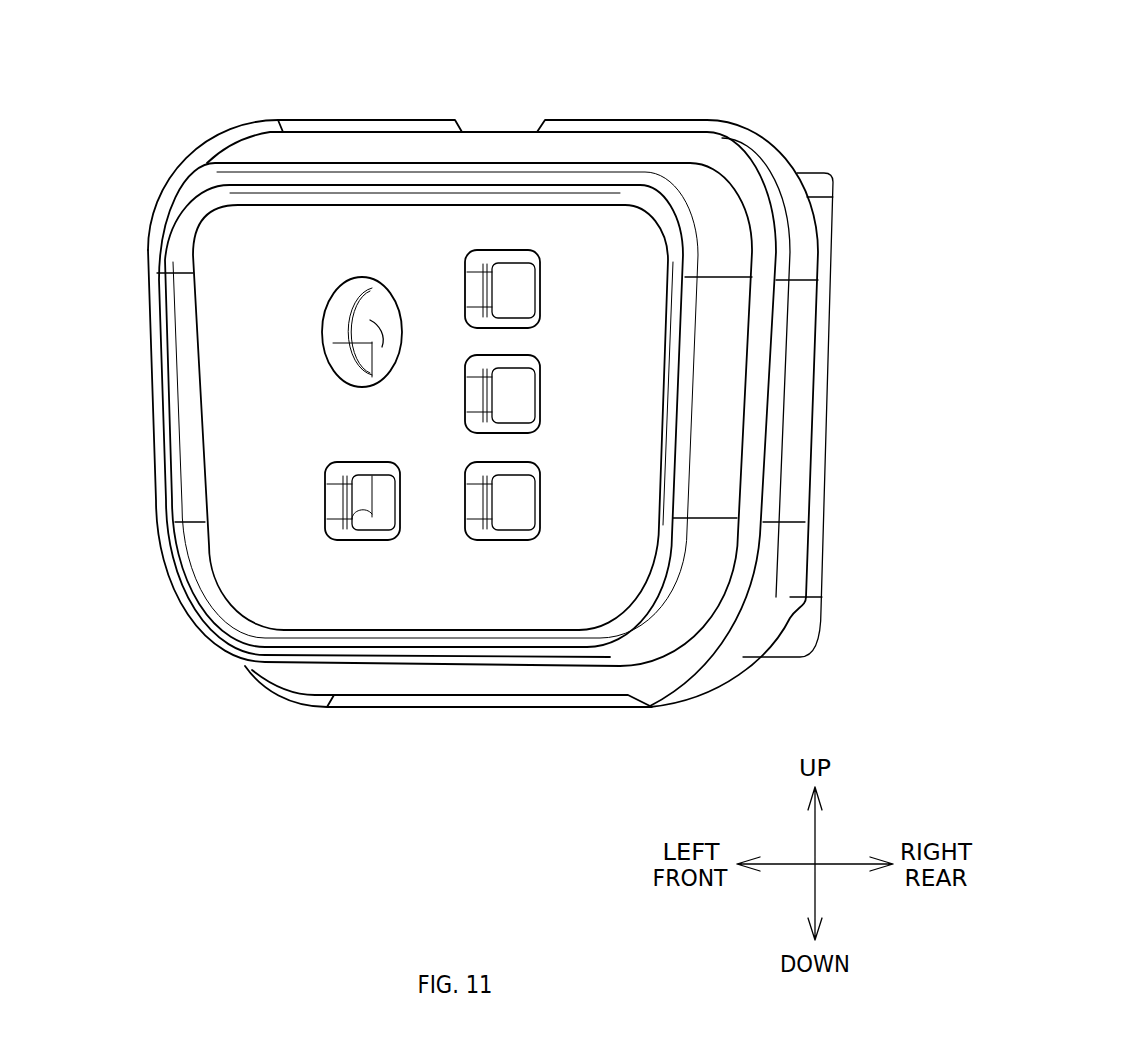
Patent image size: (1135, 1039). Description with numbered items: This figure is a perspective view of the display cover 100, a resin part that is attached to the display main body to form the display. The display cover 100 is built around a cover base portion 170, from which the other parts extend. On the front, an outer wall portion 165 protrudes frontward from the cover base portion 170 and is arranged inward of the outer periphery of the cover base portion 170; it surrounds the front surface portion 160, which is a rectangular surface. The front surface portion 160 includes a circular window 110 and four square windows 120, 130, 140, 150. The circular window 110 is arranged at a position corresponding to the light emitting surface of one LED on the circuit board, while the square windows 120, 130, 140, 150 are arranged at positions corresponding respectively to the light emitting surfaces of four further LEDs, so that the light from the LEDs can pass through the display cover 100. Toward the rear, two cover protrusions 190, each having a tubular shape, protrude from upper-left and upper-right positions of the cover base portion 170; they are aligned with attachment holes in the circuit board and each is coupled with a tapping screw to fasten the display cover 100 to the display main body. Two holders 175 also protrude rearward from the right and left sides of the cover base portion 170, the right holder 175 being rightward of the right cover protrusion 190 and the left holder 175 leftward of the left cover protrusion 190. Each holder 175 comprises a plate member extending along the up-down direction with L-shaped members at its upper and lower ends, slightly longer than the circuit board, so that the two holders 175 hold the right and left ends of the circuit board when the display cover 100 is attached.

The display cover 100 is at (763, 121).
The circular window 110 is at (358, 278).
The square window 120 is at (388, 505).
The square window 130 is at (512, 283).
The square window 140 is at (520, 392).
The square window 150 is at (515, 505).
The front surface portion 160 is at (268, 305).
The outer wall portion 165 is at (175, 425).
The cover base portion 170 is at (677, 668).
The holder 175 is at (814, 477).
The cover protrusion 190 is at (360, 378).